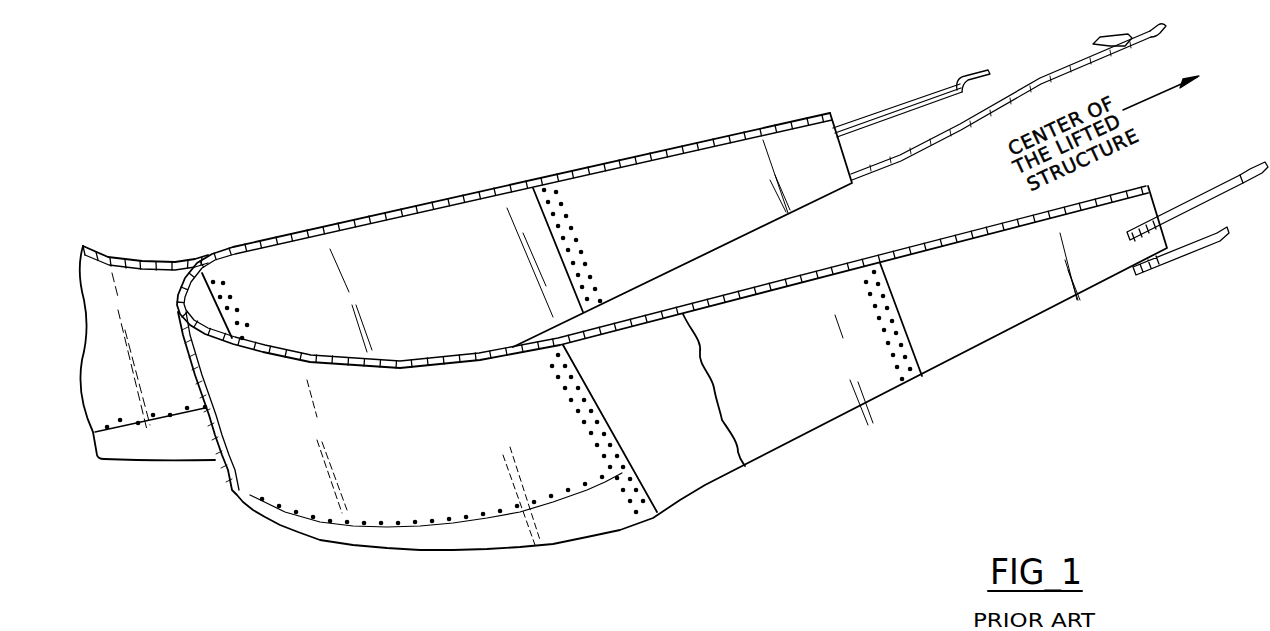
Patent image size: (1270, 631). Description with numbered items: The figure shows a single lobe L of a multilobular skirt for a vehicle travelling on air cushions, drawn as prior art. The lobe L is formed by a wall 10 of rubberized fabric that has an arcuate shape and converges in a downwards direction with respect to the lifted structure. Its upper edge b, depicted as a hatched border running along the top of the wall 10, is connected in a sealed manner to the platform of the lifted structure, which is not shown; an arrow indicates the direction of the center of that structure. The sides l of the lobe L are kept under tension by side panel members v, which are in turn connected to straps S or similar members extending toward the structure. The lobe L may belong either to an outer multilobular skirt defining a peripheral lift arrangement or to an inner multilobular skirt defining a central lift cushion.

The lobe L is at (133, 246).
The upper edge b is at (325, 222).
The sides l is at (493, 208).
The side panel members v is at (816, 326).
The straps S is at (955, 85).
The wall 10 is at (403, 504).